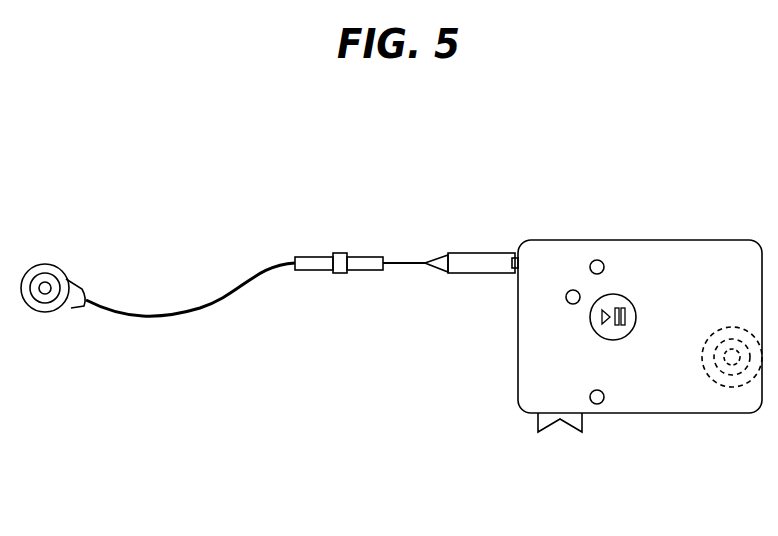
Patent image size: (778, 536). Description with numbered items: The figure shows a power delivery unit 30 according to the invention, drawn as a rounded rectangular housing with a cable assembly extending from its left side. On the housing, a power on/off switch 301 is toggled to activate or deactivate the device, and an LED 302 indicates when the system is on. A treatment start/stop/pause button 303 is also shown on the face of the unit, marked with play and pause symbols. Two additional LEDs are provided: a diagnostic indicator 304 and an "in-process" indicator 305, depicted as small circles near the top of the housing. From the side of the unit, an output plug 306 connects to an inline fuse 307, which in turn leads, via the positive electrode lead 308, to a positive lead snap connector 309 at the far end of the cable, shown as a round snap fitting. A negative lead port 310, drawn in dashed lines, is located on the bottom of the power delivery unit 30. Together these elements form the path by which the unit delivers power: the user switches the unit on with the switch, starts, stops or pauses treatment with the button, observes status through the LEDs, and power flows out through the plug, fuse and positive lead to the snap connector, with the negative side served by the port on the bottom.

The power delivery unit 30 is at (405, 351).
The power on/off switch 301 is at (553, 429).
The LED 302 is at (602, 401).
The treatment start/stop/pause button 303 is at (636, 308).
The diagnostic indicator 304 is at (600, 260).
The in-process indicator 305 is at (572, 290).
The output plug 306 is at (476, 252).
The inline fuse 307 is at (338, 252).
The positive electrode lead 308 is at (172, 312).
The positive lead snap connector 309 is at (42, 262).
The negative lead port 310 is at (727, 388).